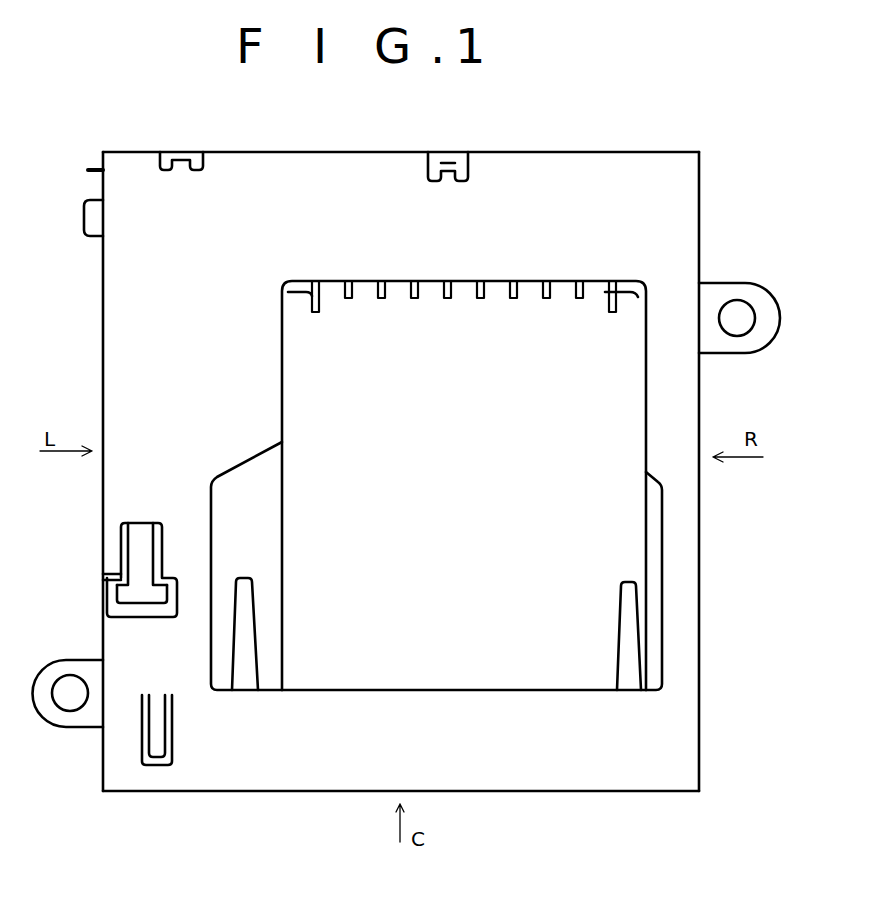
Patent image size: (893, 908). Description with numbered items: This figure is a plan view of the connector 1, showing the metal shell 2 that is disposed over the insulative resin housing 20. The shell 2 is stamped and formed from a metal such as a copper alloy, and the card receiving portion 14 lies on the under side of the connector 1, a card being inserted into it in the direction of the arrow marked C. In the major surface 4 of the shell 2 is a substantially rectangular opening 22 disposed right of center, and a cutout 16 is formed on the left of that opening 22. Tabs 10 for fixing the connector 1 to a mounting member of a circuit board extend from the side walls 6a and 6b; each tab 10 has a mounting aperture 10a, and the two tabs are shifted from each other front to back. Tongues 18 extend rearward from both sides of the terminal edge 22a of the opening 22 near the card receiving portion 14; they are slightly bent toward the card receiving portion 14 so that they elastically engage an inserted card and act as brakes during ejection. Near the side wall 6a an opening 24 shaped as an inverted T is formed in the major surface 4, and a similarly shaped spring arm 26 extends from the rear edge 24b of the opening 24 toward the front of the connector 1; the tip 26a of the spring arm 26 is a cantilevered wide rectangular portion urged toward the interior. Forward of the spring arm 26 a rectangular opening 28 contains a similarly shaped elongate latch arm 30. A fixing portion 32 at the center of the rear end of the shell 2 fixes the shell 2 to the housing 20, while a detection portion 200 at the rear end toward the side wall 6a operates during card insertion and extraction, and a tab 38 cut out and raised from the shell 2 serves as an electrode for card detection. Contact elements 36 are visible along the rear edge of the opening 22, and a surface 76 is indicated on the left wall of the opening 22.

The connector 1 is at (530, 116).
The shell 2 is at (204, 345).
The major surface 4 is at (354, 150).
The side wall 6a is at (103, 513).
The side wall 6b is at (699, 530).
The tab 10 is at (58, 664).
The mounting aperture 10a is at (70, 706).
The card receiving portion 14 is at (450, 792).
The cutout 16 is at (213, 526).
The tongue 18 is at (245, 633).
The housing 20 is at (297, 488).
The opening 22 is at (644, 388).
The terminal edge 22a is at (438, 690).
The opening 24 is at (160, 615).
The rear edge 24b is at (141, 522).
The spring arm 26 is at (115, 569).
The tip 26a is at (134, 595).
The rectangular opening 28 is at (160, 765).
The latch arm 30 is at (148, 750).
The fixing portion 32 is at (446, 147).
The contacts 36 is at (436, 300).
The tab 38 is at (88, 218).
The guide surface 76 is at (283, 562).
The detection portion 200 is at (183, 146).